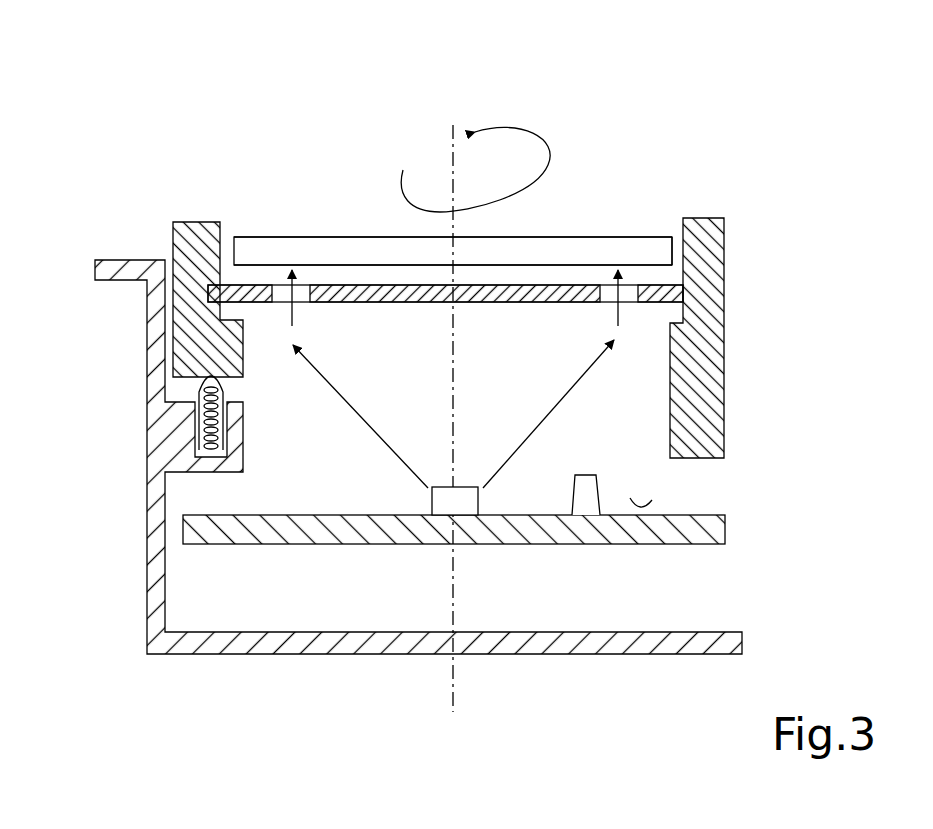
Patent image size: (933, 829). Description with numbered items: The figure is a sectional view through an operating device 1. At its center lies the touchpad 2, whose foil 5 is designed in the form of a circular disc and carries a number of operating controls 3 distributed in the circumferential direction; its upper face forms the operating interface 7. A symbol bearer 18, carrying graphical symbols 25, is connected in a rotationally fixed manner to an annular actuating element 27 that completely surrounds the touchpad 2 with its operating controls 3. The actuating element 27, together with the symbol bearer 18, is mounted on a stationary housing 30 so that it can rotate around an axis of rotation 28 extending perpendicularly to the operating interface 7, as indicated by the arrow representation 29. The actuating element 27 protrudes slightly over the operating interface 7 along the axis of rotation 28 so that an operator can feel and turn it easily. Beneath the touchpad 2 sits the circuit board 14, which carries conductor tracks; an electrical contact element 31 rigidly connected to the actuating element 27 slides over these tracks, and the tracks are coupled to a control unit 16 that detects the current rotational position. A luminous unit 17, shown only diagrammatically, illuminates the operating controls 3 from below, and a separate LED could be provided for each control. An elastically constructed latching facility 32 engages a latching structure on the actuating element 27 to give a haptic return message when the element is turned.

The operating device 1 is at (150, 130).
The touchpad 2 is at (660, 250).
The operating controls 3 is at (268, 237).
The foil 5 is at (575, 250).
The operating interface 7 is at (337, 236).
The circuit board 14 is at (715, 525).
The control unit 16 is at (591, 475).
The luminous unit 17 is at (478, 505).
The symbol bearer 18 is at (690, 290).
The graphical symbols 25 is at (305, 302).
The actuating element 27 is at (705, 318).
The axis of rotation 28 is at (453, 143).
The arrow representation 29 is at (531, 127).
The housing 30 is at (155, 320).
The electrical contact element 31 is at (655, 500).
The latching facility 32 is at (200, 388).